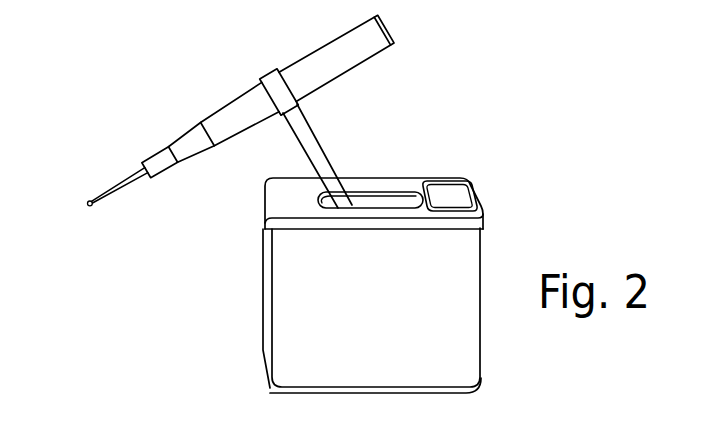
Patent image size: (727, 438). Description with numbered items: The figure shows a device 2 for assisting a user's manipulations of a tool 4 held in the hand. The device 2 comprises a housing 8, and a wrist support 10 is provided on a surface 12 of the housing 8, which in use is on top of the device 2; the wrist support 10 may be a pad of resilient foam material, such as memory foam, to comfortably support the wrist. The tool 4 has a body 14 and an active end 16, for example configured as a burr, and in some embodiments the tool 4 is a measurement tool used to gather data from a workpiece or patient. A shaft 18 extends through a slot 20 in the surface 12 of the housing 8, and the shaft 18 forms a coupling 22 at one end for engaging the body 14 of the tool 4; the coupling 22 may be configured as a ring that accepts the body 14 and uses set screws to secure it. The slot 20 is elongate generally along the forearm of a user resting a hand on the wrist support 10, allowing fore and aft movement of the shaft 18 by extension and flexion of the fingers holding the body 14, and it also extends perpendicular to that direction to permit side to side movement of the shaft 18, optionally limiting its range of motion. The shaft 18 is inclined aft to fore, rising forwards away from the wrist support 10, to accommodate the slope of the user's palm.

The device 2 is at (223, 377).
The tool 4 is at (218, 106).
The housing 8 is at (482, 247).
The wrist support 10 is at (452, 190).
The surface 12 is at (280, 206).
The body 14 is at (320, 87).
The active end 16 is at (85, 200).
The shaft 18 is at (328, 155).
The slot 20 is at (383, 198).
The coupling 22 is at (270, 72).